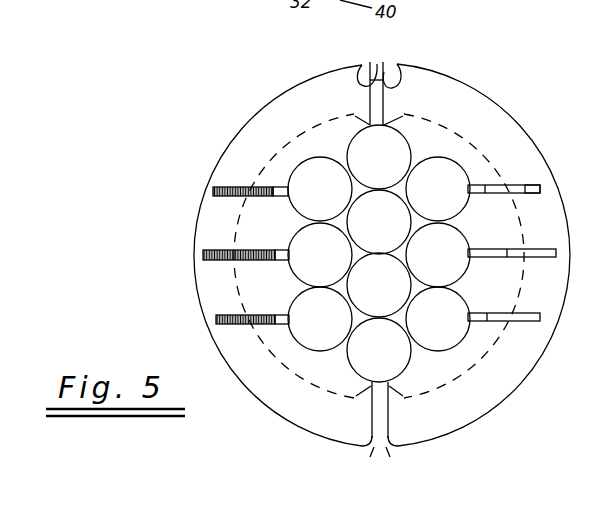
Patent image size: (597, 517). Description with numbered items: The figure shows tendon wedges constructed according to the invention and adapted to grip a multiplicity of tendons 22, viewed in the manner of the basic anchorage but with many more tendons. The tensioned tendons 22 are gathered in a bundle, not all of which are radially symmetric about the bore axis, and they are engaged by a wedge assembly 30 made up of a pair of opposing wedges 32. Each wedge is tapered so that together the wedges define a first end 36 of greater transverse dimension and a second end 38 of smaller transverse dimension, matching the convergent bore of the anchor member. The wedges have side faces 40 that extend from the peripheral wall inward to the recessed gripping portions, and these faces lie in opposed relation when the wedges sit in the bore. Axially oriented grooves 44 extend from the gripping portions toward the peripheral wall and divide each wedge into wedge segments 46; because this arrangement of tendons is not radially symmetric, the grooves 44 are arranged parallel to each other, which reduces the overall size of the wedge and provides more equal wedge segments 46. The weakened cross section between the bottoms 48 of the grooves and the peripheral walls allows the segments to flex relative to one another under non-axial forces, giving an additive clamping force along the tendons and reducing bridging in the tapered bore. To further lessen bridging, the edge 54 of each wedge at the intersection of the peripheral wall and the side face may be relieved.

The tendons 22 is at (428, 168).
The wedge assembly 30 is at (519, 101).
The wedges 32 is at (319, 82).
The first end 36 is at (261, 158).
The second end 38 is at (290, 142).
The side faces 40 is at (371, 63).
The grooves 44 is at (522, 184).
The wedge segments 46 is at (543, 290).
The bottoms of the grooves 48 is at (540, 190).
The edge 54 is at (380, 429).